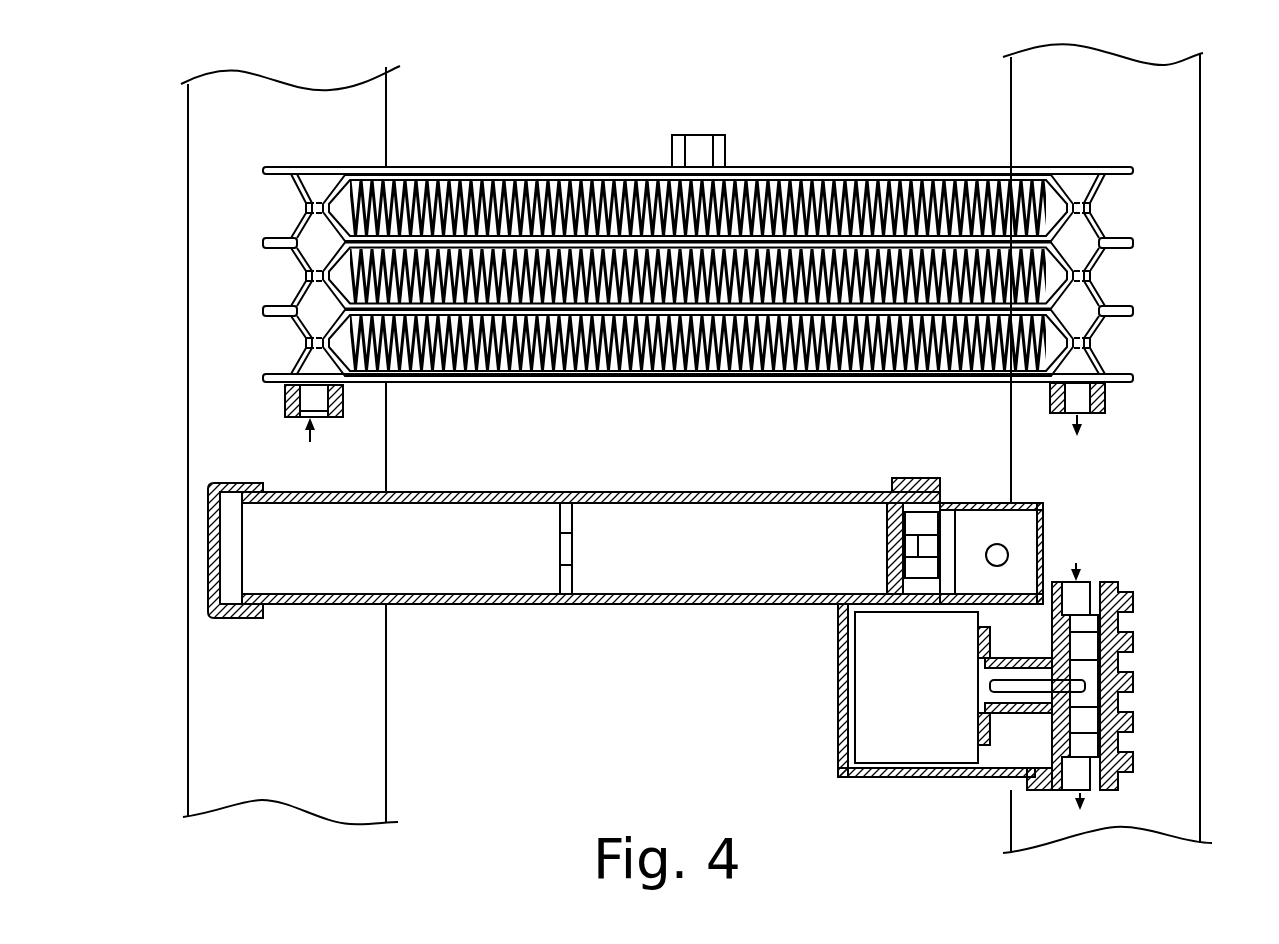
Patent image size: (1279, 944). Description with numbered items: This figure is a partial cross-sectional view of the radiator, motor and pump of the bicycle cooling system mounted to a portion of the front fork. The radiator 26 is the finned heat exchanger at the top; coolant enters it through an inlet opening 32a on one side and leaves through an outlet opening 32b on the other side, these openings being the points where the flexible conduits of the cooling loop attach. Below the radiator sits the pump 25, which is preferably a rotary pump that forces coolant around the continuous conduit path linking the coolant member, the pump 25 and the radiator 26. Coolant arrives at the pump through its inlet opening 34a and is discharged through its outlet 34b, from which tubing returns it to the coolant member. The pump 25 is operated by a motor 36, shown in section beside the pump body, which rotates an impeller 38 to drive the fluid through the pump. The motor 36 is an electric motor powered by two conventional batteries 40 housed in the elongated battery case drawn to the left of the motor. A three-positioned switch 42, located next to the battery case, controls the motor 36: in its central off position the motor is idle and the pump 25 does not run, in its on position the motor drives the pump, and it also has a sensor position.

The pump 25 is at (978, 783).
The radiator 26 is at (792, 162).
The inlet opening 32a is at (326, 414).
The outlet opening 32b is at (1064, 414).
The inlet opening 34a is at (1085, 582).
The outlet 34b is at (1085, 780).
The motor 36 is at (873, 747).
The impeller 38 is at (1085, 646).
The batteries 40 is at (610, 518).
The three-positioned switch 42 is at (1025, 532).